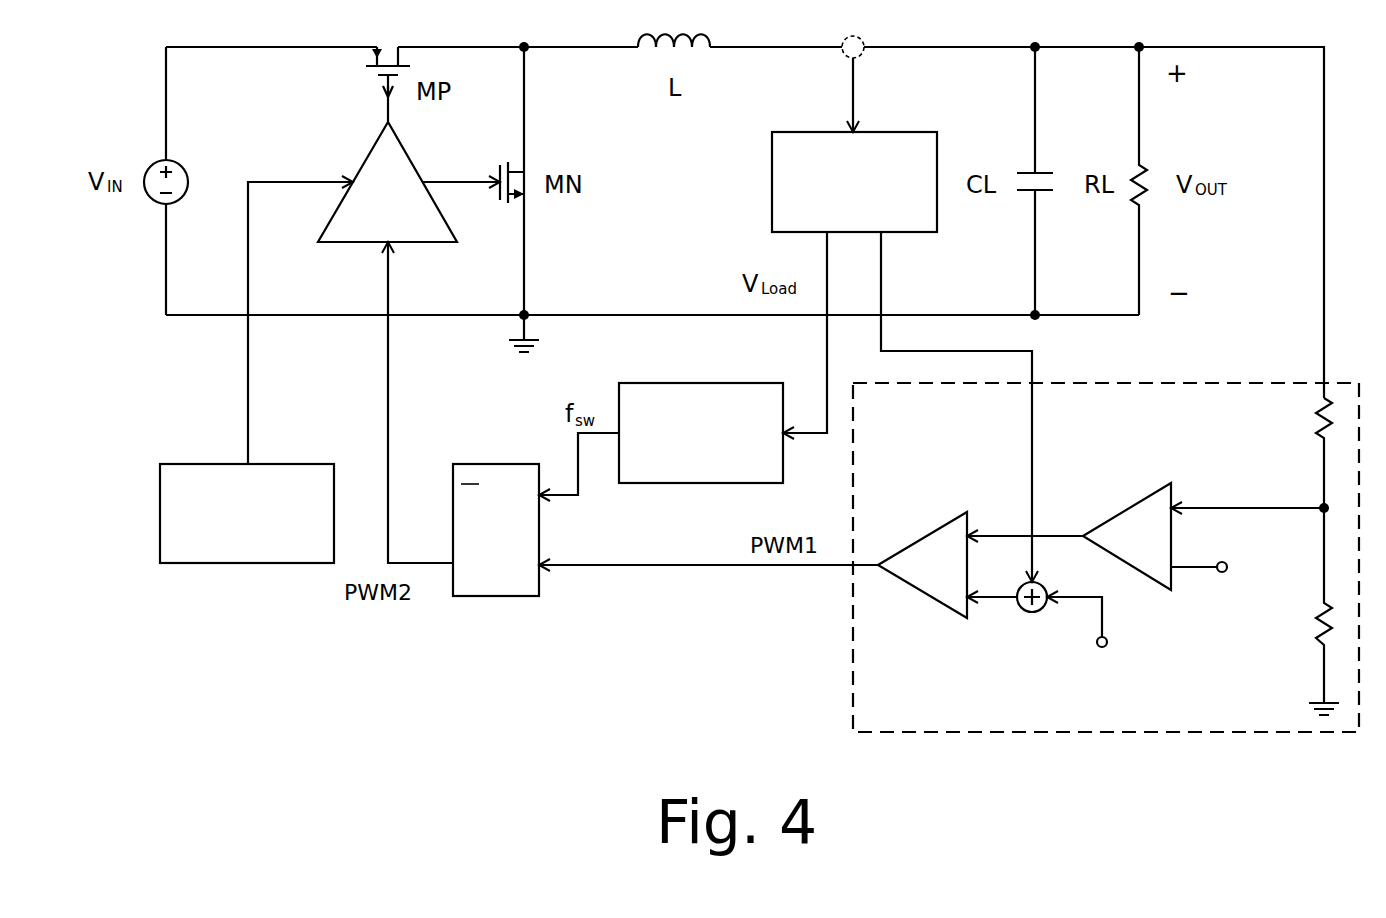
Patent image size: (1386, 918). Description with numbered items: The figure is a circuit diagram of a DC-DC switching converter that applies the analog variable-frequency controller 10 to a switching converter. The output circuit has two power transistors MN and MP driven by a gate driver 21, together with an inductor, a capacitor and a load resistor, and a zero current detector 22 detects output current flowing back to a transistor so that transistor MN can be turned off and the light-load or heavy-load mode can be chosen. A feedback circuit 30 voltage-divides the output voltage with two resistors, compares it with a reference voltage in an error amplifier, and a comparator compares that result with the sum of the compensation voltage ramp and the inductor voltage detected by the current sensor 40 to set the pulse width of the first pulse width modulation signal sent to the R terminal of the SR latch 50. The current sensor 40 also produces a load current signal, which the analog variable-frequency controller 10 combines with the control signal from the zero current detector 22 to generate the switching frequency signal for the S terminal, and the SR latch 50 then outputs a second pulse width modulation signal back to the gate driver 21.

The analog variable-frequency controller 10 is at (718, 388).
The gate driver 21 is at (362, 158).
The zero current detector 22 is at (308, 472).
The feedback circuit 30 is at (1243, 382).
The current sensor 40 is at (903, 131).
The SR latch 50 is at (503, 464).